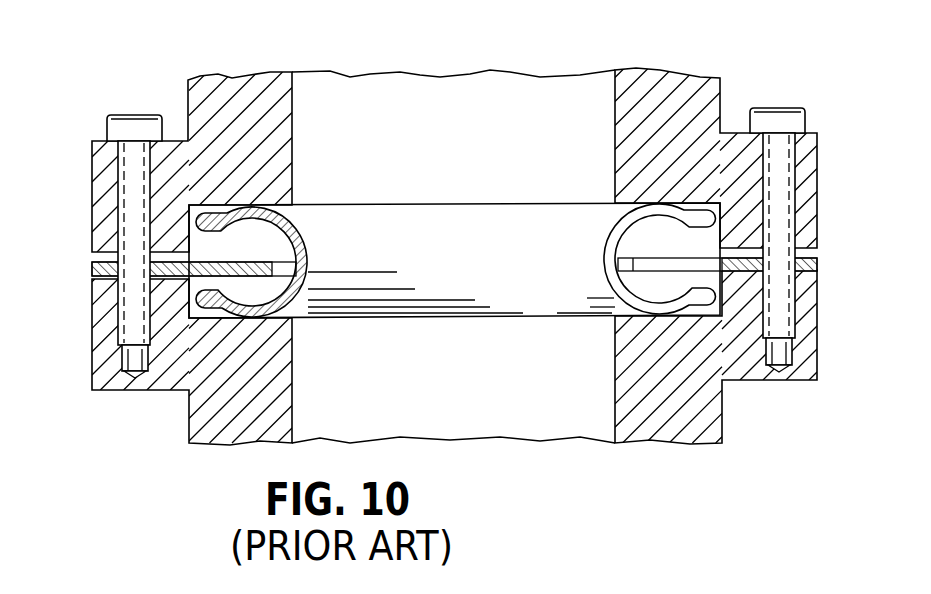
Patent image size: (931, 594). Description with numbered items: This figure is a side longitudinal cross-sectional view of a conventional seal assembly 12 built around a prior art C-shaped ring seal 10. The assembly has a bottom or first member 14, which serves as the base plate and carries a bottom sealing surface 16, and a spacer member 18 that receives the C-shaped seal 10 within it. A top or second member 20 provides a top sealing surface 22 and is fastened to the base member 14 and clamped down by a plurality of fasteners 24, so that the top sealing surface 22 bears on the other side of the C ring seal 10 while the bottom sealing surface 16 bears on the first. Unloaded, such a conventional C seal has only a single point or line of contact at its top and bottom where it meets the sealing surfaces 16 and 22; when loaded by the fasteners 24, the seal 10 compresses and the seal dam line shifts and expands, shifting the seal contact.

The C-shaped seal 10 is at (355, 202).
The seal assembly 12 is at (740, 95).
The first member 14 is at (188, 418).
The bottom sealing surface 16 is at (300, 320).
The spacer member 18 is at (85, 261).
The second member 20 is at (185, 108).
The top sealing surface 22 is at (300, 212).
The fasteners 24 is at (130, 113).